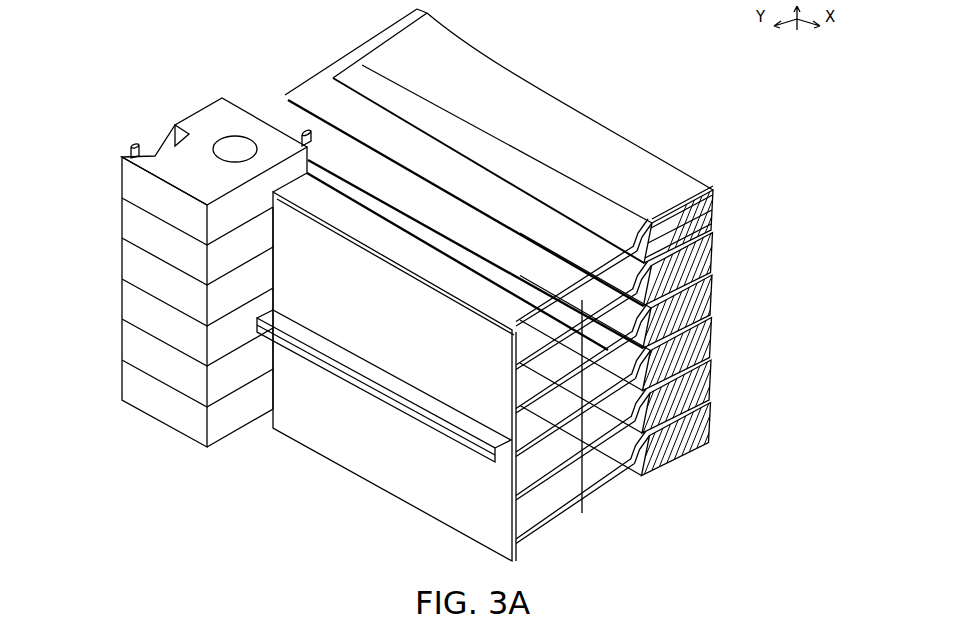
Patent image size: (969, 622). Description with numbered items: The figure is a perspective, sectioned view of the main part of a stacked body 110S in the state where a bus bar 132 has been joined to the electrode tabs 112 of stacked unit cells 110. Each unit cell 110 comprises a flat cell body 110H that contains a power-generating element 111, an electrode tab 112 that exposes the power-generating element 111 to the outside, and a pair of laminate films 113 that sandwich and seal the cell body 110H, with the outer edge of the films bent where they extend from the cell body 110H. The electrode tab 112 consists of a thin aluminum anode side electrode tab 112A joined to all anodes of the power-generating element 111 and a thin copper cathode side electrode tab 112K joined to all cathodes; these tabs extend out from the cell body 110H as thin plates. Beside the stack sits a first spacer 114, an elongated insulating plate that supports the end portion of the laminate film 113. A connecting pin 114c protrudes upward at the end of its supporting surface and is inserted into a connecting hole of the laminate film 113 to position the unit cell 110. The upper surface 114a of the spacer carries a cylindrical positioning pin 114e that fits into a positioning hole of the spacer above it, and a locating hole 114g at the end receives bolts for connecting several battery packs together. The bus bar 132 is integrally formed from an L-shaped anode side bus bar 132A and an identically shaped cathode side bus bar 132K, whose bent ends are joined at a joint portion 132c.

The unit cell 110 is at (570, 264).
The stacked body 110S is at (591, 86).
The cell body 110H is at (708, 330).
The power-generating element 111 is at (712, 212).
The laminate film 113 is at (713, 191).
The electrode tab 112 is at (675, 365).
The cathode side electrode tab 112K is at (645, 386).
The anode side electrode tab 112A is at (537, 537).
The first spacer 114 is at (179, 239).
The upper surface 114a is at (218, 112).
The connecting pin 114c is at (304, 133).
The positioning pin 114e is at (134, 145).
The locating hole 114g is at (227, 146).
The bus bar 132 is at (327, 360).
The cathode side bus bar 132K is at (313, 292).
The anode side bus bar 132A is at (313, 380).
The joint portion 132c is at (377, 400).